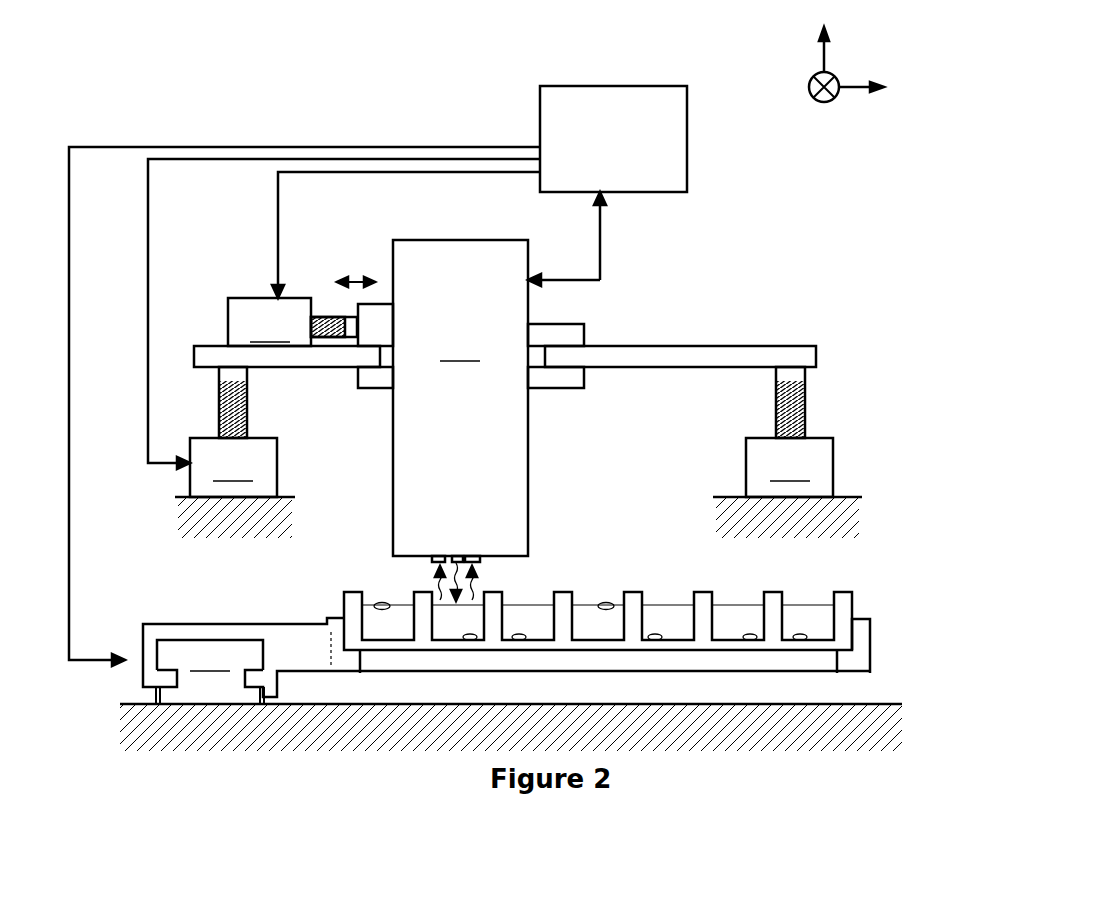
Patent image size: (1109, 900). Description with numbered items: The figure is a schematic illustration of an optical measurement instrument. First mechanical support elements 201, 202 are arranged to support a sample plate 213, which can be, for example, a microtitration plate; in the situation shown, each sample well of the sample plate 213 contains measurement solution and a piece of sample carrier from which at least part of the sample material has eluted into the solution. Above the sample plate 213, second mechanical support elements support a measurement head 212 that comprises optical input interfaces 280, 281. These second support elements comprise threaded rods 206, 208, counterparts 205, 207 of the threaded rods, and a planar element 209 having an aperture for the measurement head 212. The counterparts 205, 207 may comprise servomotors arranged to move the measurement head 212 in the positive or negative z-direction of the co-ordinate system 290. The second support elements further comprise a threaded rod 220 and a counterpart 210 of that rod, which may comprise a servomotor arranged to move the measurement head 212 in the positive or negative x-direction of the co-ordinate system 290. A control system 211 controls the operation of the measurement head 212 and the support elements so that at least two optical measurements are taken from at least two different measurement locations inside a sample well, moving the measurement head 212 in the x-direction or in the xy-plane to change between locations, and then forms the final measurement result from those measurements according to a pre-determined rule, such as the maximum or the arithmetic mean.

The first mechanical support element 201 is at (210, 656).
The first mechanical support element 202 is at (215, 623).
The counterpart of the threaded rod 205 is at (235, 488).
The threaded rod 206 is at (250, 407).
The counterpart of the threaded rod 207 is at (787, 488).
The threaded rod 208 is at (775, 408).
The planar element 209 is at (718, 346).
The counterpart of the threaded rod 210 is at (269, 322).
The control system 211 is at (540, 120).
The measurement head 212 is at (432, 420).
The sample plate 213 is at (855, 596).
The threaded rod 220 is at (330, 317).
The optical input interface 280 is at (480, 561).
The optical input interface 281 is at (432, 561).
The co-ordinate system 290 is at (857, 70).